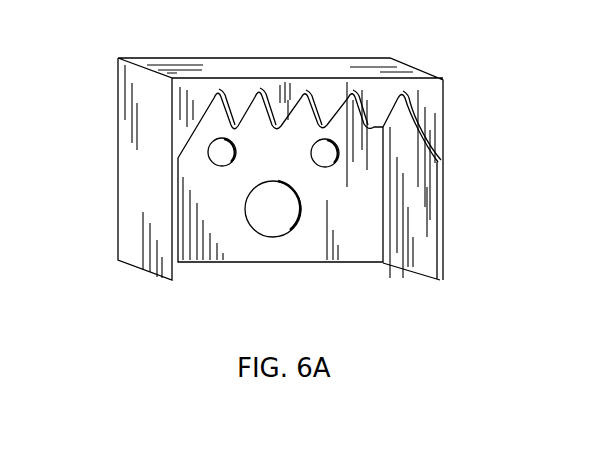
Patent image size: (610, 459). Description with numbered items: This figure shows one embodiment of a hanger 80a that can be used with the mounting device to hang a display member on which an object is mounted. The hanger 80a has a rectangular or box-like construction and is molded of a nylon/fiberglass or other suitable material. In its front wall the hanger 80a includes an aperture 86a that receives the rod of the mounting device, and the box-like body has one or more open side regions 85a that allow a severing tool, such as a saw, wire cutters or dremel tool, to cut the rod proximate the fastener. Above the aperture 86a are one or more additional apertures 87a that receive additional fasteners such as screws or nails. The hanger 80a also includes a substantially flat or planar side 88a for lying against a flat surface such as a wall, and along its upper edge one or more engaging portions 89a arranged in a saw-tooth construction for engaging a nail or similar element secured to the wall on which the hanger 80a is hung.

The hanger 80a is at (184, 43).
The open side region 85a is at (406, 290).
The aperture 86a is at (286, 228).
The additional aperture 87a is at (315, 158).
The substantially flat or planar side 88a is at (428, 115).
The engaging portion 89a is at (258, 89).